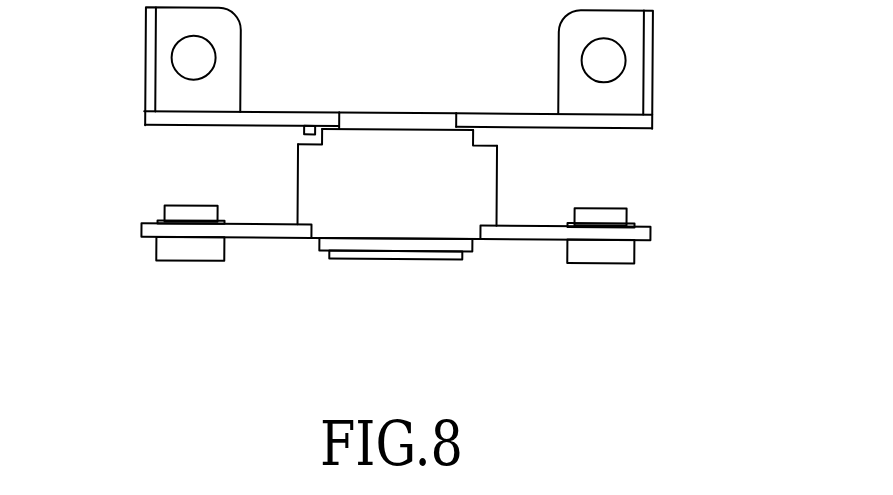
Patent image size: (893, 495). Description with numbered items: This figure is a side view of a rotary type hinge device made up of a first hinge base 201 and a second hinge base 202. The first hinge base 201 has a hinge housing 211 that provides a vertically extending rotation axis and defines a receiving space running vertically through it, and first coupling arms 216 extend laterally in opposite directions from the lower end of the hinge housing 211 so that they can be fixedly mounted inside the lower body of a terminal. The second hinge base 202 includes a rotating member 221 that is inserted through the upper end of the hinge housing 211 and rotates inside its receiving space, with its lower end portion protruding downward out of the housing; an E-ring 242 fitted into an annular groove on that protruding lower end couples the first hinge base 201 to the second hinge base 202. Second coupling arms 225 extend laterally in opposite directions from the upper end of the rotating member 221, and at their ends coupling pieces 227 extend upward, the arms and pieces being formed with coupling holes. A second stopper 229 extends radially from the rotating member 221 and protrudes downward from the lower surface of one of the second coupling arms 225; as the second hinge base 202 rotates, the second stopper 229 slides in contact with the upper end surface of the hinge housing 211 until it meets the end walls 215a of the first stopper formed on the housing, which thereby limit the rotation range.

The first hinge base 201 is at (298, 256).
The second hinge base 202 is at (393, 88).
The hinge housing 211 is at (487, 182).
The end walls of the first stopper 215a is at (317, 113).
The first coupling arms 216 is at (253, 228).
The rotating member 221 is at (397, 255).
The second coupling arms 225 is at (268, 117).
The coupling pieces 227 is at (150, 21).
The second stopper 229 is at (306, 130).
The E-ring 242 is at (440, 243).